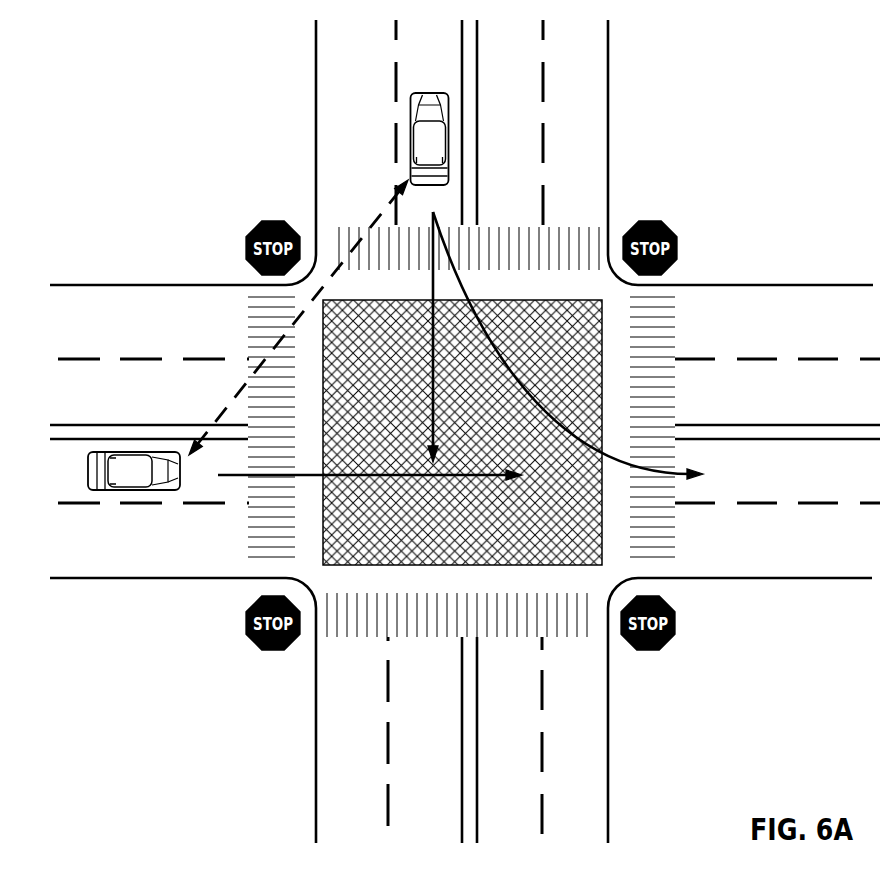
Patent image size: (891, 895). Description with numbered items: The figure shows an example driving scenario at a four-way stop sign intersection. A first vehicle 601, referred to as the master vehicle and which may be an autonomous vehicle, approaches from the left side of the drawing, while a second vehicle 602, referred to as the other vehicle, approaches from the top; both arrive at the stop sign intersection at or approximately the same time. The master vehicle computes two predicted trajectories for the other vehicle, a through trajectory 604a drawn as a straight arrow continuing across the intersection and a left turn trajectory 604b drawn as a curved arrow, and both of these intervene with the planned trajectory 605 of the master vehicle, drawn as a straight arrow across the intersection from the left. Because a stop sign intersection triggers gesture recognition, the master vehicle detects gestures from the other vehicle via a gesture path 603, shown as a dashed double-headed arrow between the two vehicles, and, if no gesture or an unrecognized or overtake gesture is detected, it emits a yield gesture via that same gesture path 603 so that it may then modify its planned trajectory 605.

The first vehicle 601 is at (97, 488).
The second vehicle 602 is at (430, 138).
The gesture path 603 is at (292, 328).
The through trajectory 604a is at (437, 318).
The left turn trajectory 604b is at (514, 385).
The planned trajectory 605 is at (347, 472).